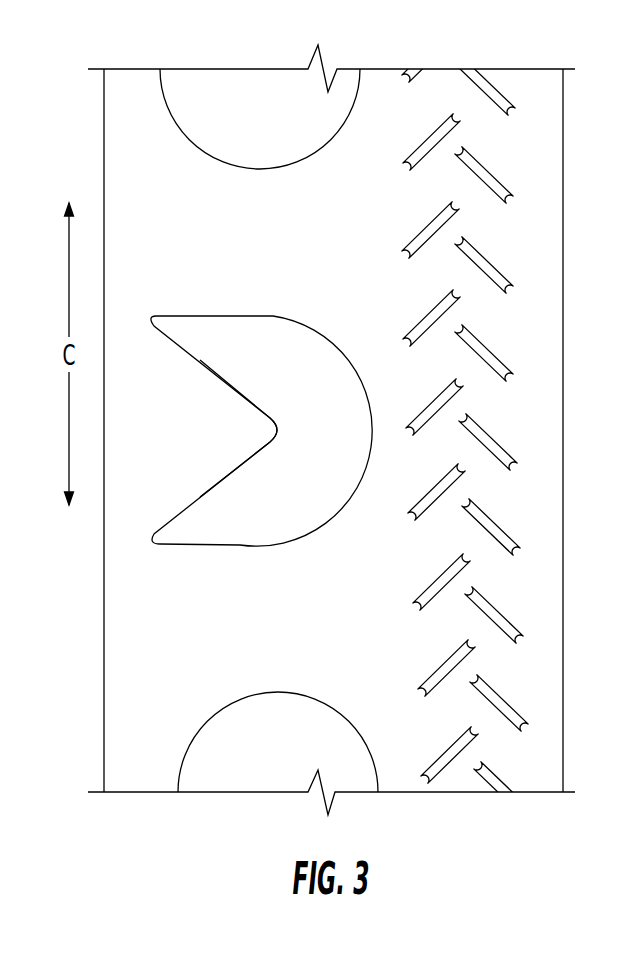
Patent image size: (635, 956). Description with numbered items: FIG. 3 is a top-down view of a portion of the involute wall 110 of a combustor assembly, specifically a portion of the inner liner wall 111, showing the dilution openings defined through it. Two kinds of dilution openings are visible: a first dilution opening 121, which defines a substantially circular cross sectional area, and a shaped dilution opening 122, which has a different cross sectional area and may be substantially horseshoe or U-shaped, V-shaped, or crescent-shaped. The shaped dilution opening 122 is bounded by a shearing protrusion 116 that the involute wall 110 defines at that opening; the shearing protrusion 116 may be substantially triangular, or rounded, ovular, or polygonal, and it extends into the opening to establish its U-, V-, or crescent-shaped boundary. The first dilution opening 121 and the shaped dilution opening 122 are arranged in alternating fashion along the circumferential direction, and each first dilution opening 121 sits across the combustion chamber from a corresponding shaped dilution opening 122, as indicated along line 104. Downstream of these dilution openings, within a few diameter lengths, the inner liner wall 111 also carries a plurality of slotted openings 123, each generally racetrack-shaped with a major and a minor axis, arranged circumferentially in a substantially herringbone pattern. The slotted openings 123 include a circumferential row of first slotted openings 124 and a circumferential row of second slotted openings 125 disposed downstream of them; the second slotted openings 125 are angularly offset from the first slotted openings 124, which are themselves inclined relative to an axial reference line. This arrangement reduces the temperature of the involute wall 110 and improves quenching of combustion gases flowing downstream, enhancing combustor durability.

The line 104 is at (337, 416).
The involute wall 110 is at (120, 75).
The inner liner wall 111 is at (135, 618).
The shearing protrusion 116 is at (263, 398).
The first dilution opening 121 is at (270, 88).
The shaped dilution opening 122 is at (261, 404).
The slotted openings 123 is at (487, 417).
The first slotted openings 124 is at (436, 134).
The second slotted openings 125 is at (490, 173).